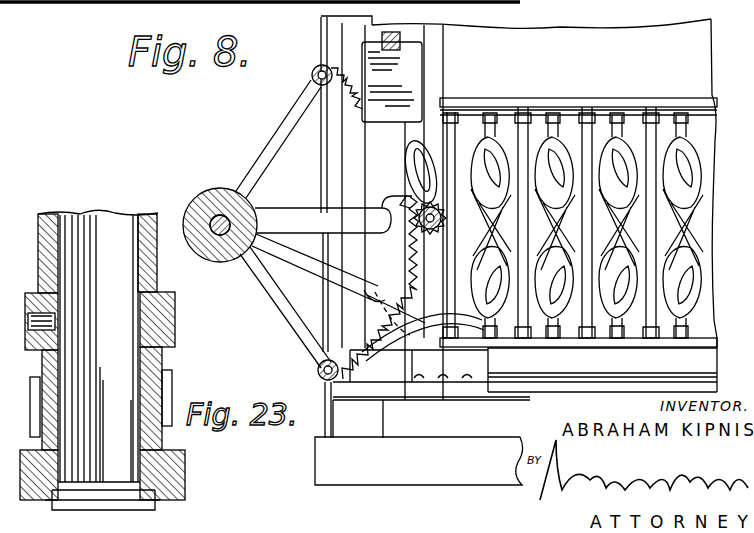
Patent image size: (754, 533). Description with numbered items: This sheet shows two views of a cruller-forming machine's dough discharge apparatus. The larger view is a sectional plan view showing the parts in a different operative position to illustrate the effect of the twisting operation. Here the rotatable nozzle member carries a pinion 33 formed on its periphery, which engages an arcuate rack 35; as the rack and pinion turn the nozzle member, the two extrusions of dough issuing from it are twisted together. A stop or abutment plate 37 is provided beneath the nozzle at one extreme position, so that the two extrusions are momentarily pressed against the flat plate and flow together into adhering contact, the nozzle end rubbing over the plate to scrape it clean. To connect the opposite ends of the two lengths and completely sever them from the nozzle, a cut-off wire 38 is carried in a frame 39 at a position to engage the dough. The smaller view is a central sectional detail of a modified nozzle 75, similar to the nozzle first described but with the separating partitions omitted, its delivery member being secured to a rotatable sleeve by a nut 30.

In FIG. 23, the nut 30 is at (185, 465).
In FIG. 23, the pinion 33 is at (174, 380).
In FIG. 8, the pinion 33 is at (436, 206).
In FIG. 8, the arcuate rack 35 is at (428, 243).
In FIG. 8, the stop or abutment plate 37 is at (410, 80).
In FIG. 8, the cut-off wire 38 is at (487, 400).
In FIG. 8, the frame 39 is at (407, 400).
In FIG. 23, the nozzle 75 is at (115, 380).